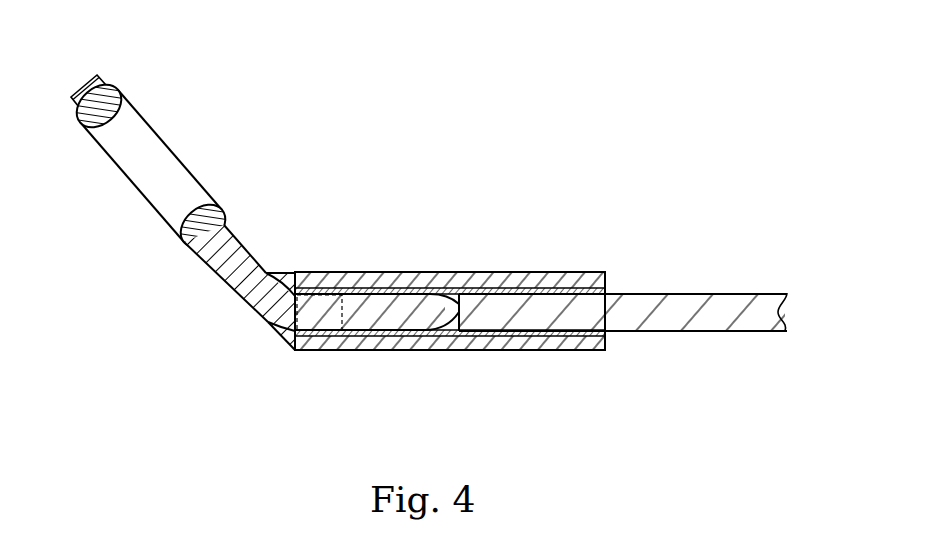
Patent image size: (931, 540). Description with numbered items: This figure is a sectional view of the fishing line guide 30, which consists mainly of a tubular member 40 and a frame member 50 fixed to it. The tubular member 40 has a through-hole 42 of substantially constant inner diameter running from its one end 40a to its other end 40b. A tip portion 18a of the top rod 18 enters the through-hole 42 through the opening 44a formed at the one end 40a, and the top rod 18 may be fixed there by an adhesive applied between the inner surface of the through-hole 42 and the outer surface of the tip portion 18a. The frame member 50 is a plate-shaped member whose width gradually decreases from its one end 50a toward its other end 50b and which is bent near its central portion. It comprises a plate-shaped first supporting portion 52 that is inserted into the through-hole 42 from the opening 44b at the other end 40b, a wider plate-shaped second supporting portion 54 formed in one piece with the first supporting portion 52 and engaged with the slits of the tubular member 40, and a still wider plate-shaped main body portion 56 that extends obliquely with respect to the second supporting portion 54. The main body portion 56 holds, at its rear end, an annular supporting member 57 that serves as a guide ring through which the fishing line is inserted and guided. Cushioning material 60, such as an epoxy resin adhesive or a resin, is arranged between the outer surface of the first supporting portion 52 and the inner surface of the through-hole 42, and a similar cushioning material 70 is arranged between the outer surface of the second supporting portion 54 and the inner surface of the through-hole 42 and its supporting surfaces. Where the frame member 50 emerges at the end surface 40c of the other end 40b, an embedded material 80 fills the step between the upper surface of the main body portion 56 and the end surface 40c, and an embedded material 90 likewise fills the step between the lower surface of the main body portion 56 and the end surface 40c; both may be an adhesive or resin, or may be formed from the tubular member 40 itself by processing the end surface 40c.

The top rod 18 is at (623, 312).
The tip portion of the top rod 18a is at (552, 318).
The fishing line guide 30 is at (655, 125).
The tubular member 40 is at (422, 275).
The one end of the tubular member 40a is at (577, 272).
The other end of the tubular member 40b is at (322, 292).
The end surface of the other end 40c is at (299, 352).
The through-hole 42 is at (453, 305).
The opening at the one end 44a is at (647, 272).
The opening at the other end 44b is at (291, 342).
The frame member 50 is at (280, 168).
The one end of the frame member 50a is at (81, 90).
The other end of the frame member 50b is at (460, 292).
The first supporting portion 52 is at (384, 310).
The second supporting portion 54 is at (384, 296).
The main body portion 56 is at (195, 253).
The annular supporting member 57 is at (112, 82).
The cushioning material 60 is at (408, 289).
The cushioning material 70 is at (325, 300).
The embedded material 80 is at (303, 271).
The embedded material 90 is at (285, 333).